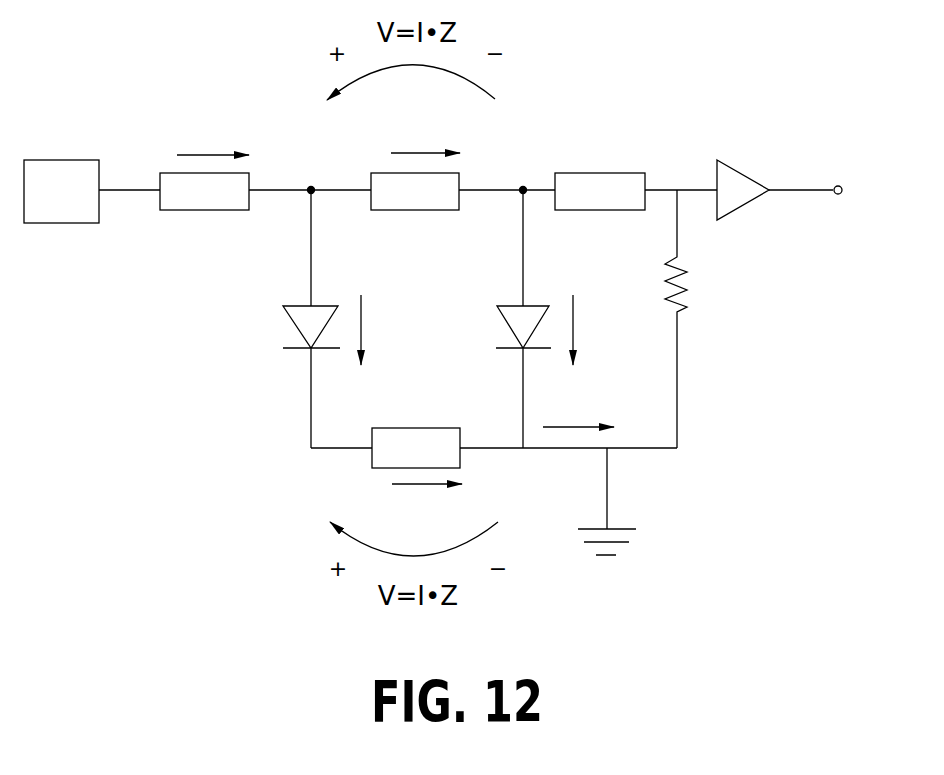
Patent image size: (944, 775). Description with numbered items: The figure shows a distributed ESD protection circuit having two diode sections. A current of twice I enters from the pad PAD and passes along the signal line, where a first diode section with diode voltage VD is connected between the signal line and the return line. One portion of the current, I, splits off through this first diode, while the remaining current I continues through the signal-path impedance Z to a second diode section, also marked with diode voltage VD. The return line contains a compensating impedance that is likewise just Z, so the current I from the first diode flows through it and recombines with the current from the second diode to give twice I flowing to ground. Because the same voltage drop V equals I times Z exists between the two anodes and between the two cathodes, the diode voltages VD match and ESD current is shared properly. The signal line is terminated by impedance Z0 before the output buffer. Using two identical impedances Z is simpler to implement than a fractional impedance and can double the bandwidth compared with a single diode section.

The pad PAD is at (61, 191).
The impedance Z is at (402, 320).
The termination impedance Z0 is at (693, 319).
The diode voltage VD is at (393, 319).
The current I is at (395, 322).